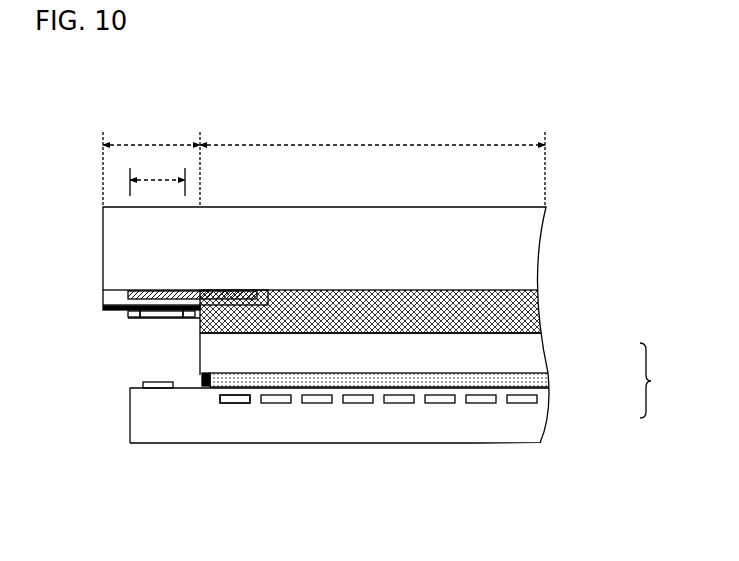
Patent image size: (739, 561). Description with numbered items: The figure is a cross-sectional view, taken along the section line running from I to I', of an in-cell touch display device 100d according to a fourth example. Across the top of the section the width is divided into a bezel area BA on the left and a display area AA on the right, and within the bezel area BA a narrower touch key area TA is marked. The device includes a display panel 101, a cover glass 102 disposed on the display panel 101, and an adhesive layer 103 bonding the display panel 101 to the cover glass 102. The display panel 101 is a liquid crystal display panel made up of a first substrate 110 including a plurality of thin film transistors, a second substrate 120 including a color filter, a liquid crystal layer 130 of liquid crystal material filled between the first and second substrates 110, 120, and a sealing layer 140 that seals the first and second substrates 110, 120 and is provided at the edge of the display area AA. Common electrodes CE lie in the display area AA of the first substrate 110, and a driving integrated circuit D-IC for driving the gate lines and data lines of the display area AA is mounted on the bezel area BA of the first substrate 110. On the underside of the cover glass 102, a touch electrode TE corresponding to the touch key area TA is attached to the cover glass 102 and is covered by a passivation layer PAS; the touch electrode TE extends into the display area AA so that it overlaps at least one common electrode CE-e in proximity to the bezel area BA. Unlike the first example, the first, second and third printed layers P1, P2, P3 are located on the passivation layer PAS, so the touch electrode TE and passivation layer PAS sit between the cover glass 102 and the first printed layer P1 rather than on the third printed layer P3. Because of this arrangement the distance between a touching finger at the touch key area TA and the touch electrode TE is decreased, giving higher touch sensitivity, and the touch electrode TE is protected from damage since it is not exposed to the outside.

The in-cell touch display device 100d is at (84, 115).
The bezel area BA is at (151, 166).
The display area AA is at (372, 166).
The touch key area TA is at (157, 177).
The cover glass 102 is at (536, 252).
The adhesive layer 103 is at (540, 310).
The second substrate 120 is at (548, 345).
The liquid crystal layer 130 is at (548, 380).
The first substrate 110 is at (547, 413).
The display panel 101 is at (661, 380).
The common electrode CE is at (360, 403).
The common electrode in proximity to the bezel area CE-e is at (235, 403).
The passivation layer PAS is at (116, 290).
The touch electrode TE is at (186, 291).
The third printed layer P3 is at (103, 318).
The first printed layer P1 is at (125, 320).
The second printed layer P2 is at (150, 318).
The sealing layer 140 is at (200, 378).
The driving integrated circuit D-IC is at (143, 385).
The section line start I is at (129, 471).
The section line end I' is at (539, 471).